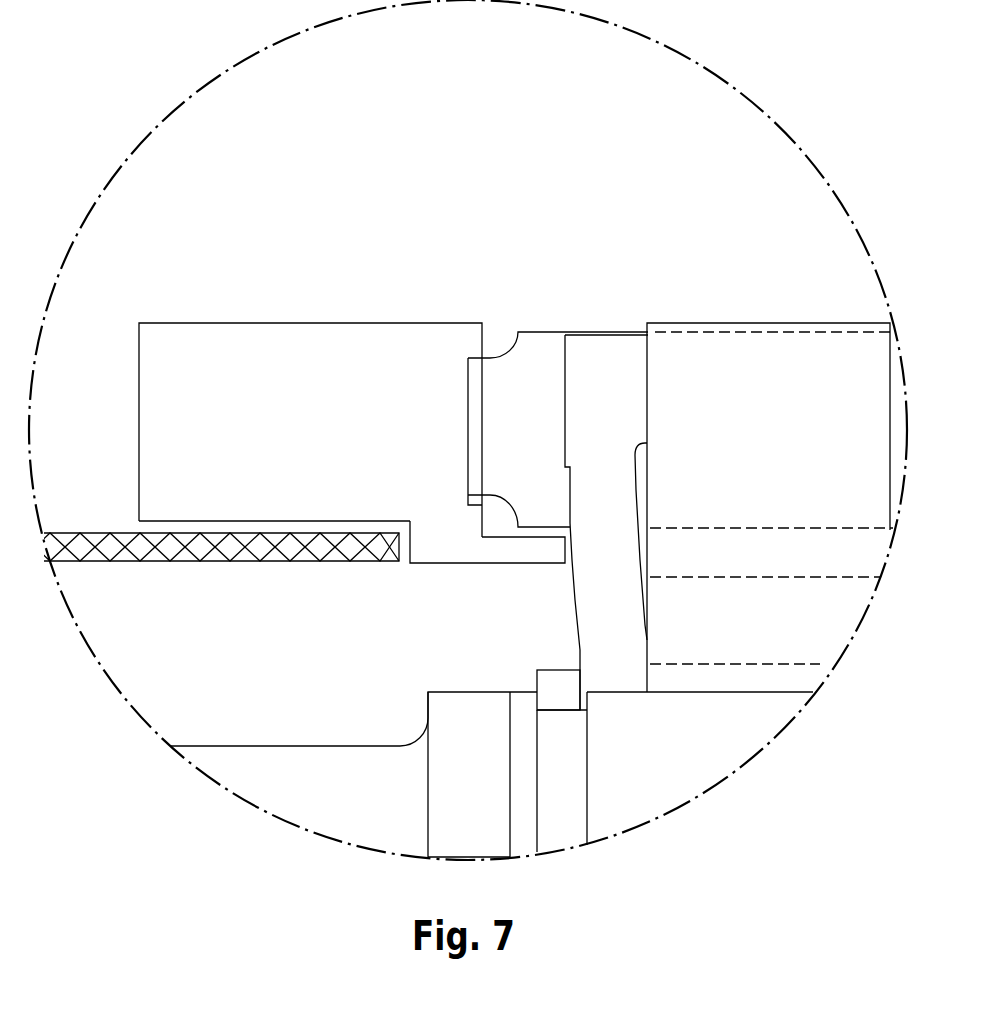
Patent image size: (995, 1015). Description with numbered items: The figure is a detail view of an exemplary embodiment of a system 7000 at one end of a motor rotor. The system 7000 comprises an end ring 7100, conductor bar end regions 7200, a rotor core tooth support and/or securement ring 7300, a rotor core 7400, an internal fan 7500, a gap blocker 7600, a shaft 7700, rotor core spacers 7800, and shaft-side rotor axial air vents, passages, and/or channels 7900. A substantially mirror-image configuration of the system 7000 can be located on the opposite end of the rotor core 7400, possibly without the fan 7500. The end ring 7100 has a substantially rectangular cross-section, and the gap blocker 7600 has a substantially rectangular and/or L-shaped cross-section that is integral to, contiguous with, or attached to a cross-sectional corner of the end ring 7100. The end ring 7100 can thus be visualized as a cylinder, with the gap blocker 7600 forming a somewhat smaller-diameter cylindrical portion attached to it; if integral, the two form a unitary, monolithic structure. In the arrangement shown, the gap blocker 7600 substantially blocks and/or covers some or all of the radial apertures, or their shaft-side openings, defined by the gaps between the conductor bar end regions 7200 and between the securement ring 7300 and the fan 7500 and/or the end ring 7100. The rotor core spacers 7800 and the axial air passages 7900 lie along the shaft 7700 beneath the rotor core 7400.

The system 7000 is at (128, 38).
The end ring 7100 is at (263, 371).
The conductor bar end region 7200 is at (523, 372).
The rotor core tooth support and/or securement ring 7300 is at (610, 372).
The rotor core 7400 is at (714, 372).
The internal fan 7500 is at (177, 576).
The gap blocker 7600 is at (440, 564).
The shaft 7700 is at (327, 803).
The rotor core spacer 7800 is at (678, 699).
The shaft-side rotor axial air vent, passage, and/or channel 7900 is at (765, 644).